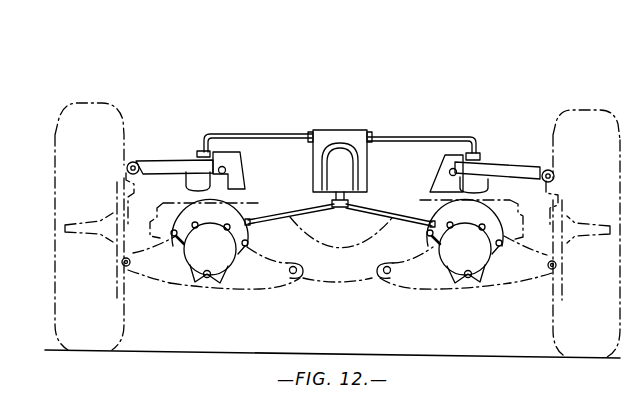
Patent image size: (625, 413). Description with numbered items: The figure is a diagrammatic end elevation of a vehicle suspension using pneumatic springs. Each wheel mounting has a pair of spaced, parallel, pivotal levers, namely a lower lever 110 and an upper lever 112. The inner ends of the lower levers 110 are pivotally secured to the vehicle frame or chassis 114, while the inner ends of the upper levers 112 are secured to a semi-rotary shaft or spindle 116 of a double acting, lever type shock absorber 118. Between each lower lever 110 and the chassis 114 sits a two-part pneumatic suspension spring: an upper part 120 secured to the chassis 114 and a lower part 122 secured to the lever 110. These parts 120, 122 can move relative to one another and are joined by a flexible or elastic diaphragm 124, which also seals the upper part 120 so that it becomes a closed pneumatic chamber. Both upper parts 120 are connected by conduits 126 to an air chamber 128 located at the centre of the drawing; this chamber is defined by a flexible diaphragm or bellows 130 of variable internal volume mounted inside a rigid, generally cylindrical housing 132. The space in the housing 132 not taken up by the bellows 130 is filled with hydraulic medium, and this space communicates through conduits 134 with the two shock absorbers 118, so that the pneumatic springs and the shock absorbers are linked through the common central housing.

The lower lever 110 is at (143, 268).
The upper lever 112 is at (163, 161).
The vehicle frame or chassis 114 is at (347, 268).
The semi-rotary shaft or spindle 116 is at (228, 170).
The shock absorber 118 is at (227, 152).
The upper part of pneumatic suspension spring 120 is at (228, 215).
The lower part of pneumatic suspension spring 122 is at (228, 264).
The flexible or elastic diaphragm 124 is at (177, 236).
The conduit 126 is at (277, 218).
The air chamber 128 is at (345, 160).
The flexible diaphragm or bellows 130 is at (330, 143).
The housing 132 is at (355, 130).
The conduit 134 is at (272, 134).